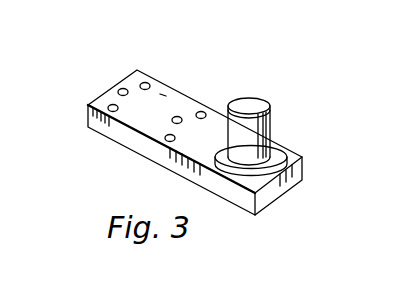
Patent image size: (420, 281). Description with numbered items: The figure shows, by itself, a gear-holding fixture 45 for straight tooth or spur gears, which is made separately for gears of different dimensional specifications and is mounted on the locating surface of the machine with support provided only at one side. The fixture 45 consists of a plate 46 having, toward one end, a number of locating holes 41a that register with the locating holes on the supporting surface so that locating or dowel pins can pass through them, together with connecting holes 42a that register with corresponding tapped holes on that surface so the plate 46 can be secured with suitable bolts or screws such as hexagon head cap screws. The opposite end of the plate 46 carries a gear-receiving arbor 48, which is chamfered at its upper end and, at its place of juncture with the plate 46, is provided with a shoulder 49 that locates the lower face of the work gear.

The locating holes 41a is at (121, 87).
The connecting holes 42a is at (206, 113).
The gear-holding fixture 45 is at (158, 164).
The plate 46 is at (163, 95).
The gear-receiving arbor 48 is at (271, 132).
The shoulder 49 is at (276, 148).